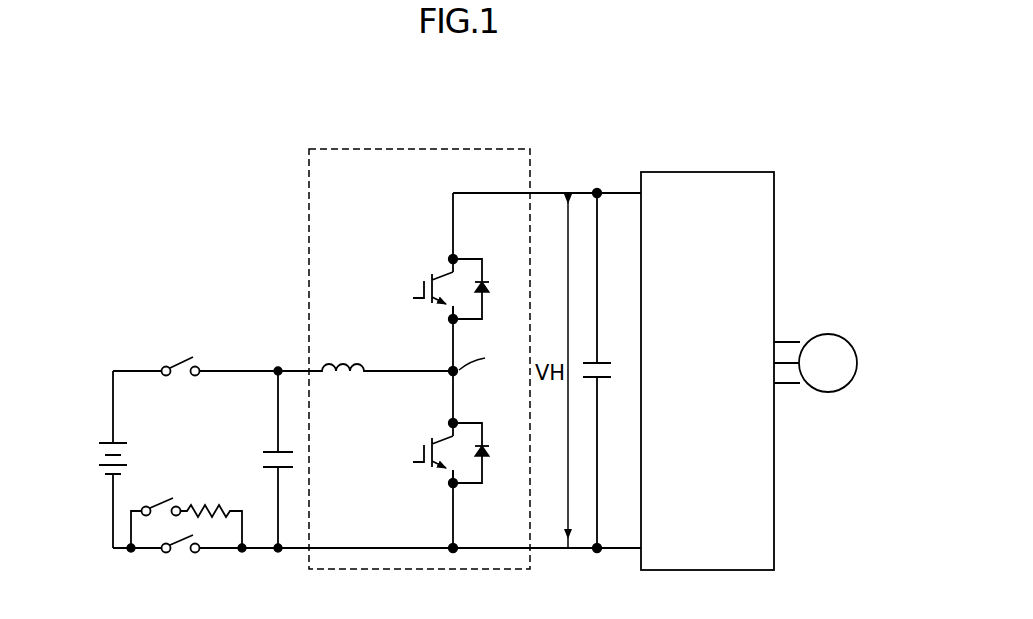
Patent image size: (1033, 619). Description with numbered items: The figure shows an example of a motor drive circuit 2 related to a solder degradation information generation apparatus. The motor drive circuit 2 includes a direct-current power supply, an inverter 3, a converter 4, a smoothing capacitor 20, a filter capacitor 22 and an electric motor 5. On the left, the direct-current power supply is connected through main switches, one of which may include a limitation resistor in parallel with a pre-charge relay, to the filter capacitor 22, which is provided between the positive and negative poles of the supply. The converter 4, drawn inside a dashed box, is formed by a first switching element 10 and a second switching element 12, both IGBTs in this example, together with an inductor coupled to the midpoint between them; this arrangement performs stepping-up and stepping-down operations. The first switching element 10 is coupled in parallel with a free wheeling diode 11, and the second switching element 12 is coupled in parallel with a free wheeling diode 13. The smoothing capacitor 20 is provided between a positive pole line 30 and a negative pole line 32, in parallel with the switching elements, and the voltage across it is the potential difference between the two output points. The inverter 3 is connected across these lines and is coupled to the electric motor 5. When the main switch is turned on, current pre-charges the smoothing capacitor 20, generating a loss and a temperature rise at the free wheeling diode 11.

The motor drive circuit 2 is at (268, 115).
The inverter 3 is at (710, 171).
The converter 4 is at (422, 148).
The electric motor 5 is at (828, 334).
The first switching element 10 is at (427, 267).
The free wheeling diode 11 is at (491, 270).
The second switching element 12 is at (427, 431).
The free wheeling diode 13 is at (491, 434).
The smoothing capacitor 20 is at (604, 355).
The filter capacitor 22 is at (268, 440).
The positive pole line 30 is at (488, 193).
The negative pole line 32 is at (488, 548).